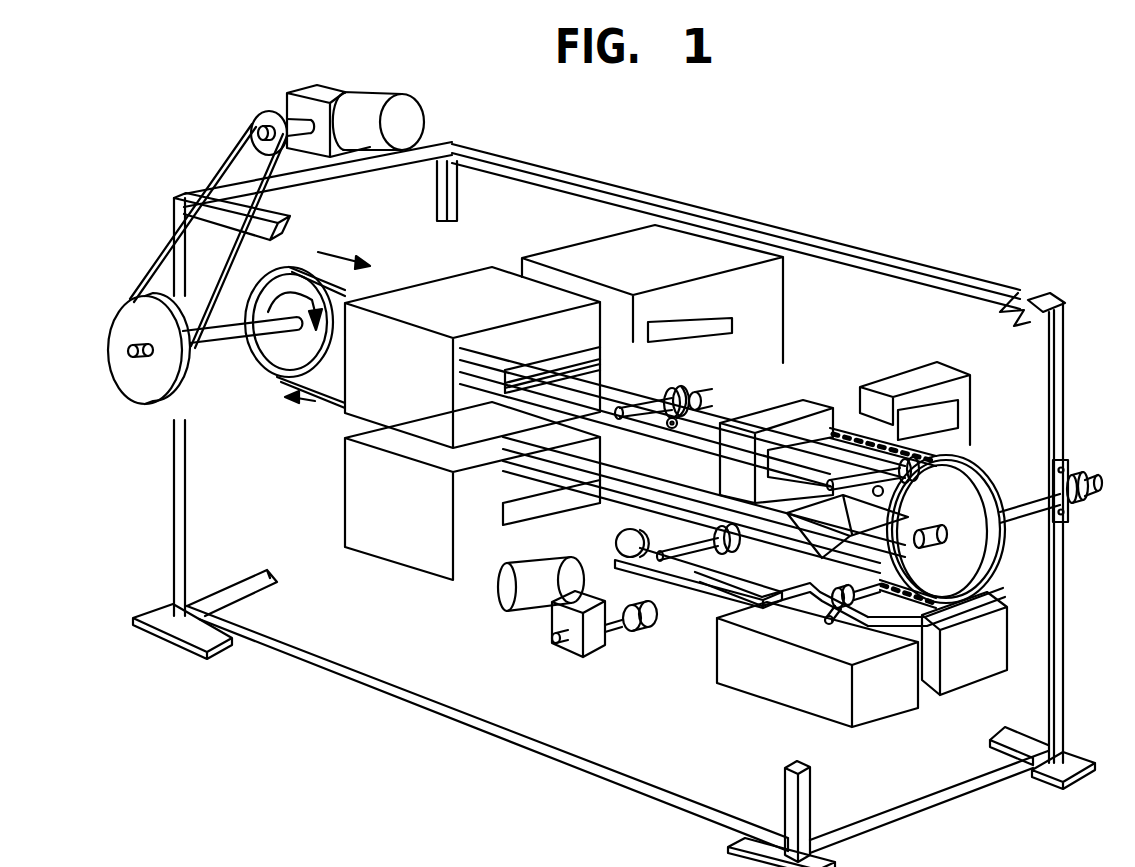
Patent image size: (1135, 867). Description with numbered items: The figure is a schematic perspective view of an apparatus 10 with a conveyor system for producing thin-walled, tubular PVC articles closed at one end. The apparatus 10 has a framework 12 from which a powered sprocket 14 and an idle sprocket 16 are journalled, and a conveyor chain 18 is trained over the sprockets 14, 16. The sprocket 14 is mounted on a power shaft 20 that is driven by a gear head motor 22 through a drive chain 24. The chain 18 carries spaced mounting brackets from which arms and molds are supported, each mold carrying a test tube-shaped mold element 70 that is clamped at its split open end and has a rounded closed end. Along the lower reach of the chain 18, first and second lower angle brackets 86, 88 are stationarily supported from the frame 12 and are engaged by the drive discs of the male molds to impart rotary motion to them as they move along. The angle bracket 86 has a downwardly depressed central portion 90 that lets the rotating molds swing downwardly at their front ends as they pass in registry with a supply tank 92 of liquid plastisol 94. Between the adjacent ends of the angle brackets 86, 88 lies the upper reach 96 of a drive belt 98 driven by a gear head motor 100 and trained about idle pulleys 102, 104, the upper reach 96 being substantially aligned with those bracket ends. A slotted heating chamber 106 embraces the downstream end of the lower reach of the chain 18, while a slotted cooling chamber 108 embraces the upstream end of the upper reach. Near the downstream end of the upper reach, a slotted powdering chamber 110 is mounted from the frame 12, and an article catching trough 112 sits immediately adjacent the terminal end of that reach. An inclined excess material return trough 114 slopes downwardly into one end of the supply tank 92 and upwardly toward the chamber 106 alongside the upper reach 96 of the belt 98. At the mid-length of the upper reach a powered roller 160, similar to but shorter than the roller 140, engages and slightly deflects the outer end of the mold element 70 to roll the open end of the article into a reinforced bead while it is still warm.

The apparatus 10 is at (745, 209).
The framework 12 is at (900, 267).
The powered sprocket 14 is at (293, 355).
The idle sprocket 16 is at (967, 532).
The conveyor chain 18 is at (372, 293).
The power shaft 20 is at (218, 344).
The gear head motor 22 is at (314, 90).
The drive chain 24 is at (153, 262).
The mold element 70 is at (848, 619).
The first lower angle bracket 86 is at (985, 619).
The second lower angle bracket 88 is at (512, 500).
The downwardly depressed central portion 90 is at (800, 587).
The supply tank 92 is at (765, 682).
The liquid plastisol 94 is at (765, 625).
The upper reach of drive belt 96 is at (667, 520).
The drive belt 98 is at (658, 629).
The gear head motor 100 is at (578, 652).
The idle pulley 102 is at (712, 562).
The idle pulley 104 is at (620, 540).
The heating chamber 106 is at (343, 474).
The cooling chamber 108 is at (553, 256).
The powdering chamber 110 is at (897, 375).
The article catching trough 112 is at (1005, 582).
The excess material return trough 114 is at (535, 595).
The roller 140 is at (960, 467).
The powered roller 160 is at (648, 424).